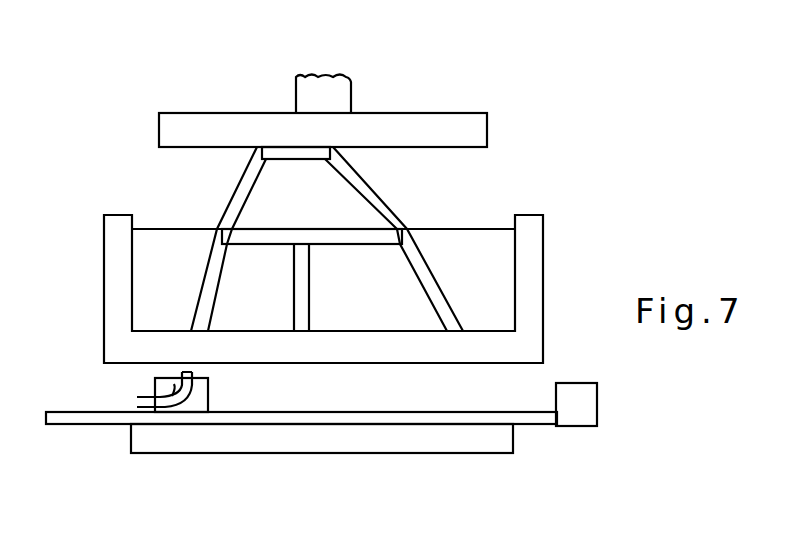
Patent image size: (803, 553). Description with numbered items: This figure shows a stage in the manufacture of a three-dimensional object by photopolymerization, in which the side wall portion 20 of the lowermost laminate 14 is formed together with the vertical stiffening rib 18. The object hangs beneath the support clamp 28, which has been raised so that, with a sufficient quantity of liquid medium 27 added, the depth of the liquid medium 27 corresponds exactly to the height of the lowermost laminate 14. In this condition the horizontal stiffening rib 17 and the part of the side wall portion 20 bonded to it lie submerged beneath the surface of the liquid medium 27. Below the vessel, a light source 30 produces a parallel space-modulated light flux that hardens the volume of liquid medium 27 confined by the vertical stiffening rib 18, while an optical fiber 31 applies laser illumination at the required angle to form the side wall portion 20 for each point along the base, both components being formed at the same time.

The lowermost laminate 14 is at (448, 296).
The horizontal stiffening rib 17 is at (300, 237).
The vertical stiffening rib 18 is at (303, 291).
The side wall portion 20 is at (204, 295).
The liquid medium 27 is at (457, 233).
The support clamp 28 is at (320, 89).
The light source 30 is at (472, 454).
The optical fiber 31 is at (140, 400).